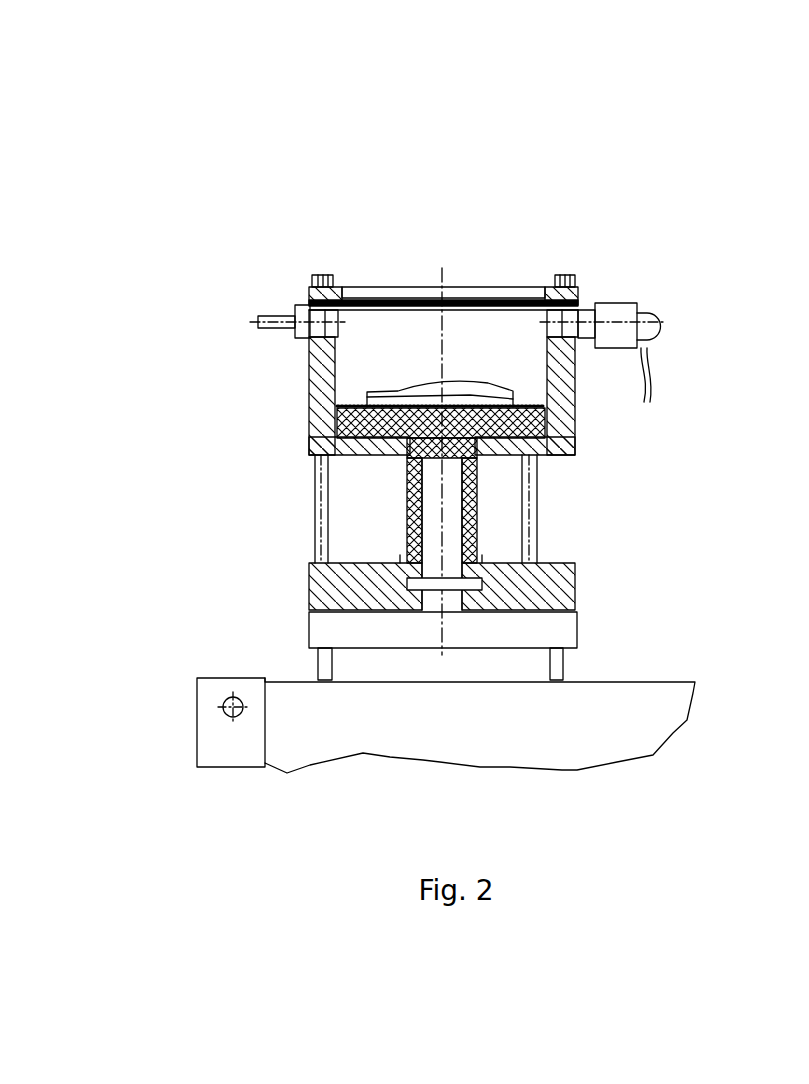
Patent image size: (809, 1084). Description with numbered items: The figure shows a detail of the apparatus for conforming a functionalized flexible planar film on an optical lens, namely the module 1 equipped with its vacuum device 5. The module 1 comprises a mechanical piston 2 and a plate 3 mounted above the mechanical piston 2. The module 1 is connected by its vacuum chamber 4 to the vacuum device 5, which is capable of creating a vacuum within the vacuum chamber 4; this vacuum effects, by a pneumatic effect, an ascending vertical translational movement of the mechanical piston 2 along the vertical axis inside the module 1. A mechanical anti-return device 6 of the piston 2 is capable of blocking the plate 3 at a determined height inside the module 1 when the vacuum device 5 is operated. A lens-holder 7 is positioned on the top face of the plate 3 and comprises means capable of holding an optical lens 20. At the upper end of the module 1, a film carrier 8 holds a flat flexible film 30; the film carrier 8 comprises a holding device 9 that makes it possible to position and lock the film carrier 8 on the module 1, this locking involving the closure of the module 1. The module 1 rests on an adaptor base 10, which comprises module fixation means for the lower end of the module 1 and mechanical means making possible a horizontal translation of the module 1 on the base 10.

The module 1 is at (620, 150).
The flat flexible film 30 is at (383, 299).
The film carrier 8 is at (535, 298).
The vacuum device 5 is at (282, 317).
The holding device 9 is at (633, 322).
The vacuum chamber 4 is at (357, 352).
The optical lens 20 is at (406, 388).
The lens-holder 7 is at (346, 412).
The plate 3 is at (516, 430).
The mechanical piston 2 is at (454, 514).
The mechanical anti-return device 6 is at (466, 586).
The adaptor base 10 is at (563, 636).